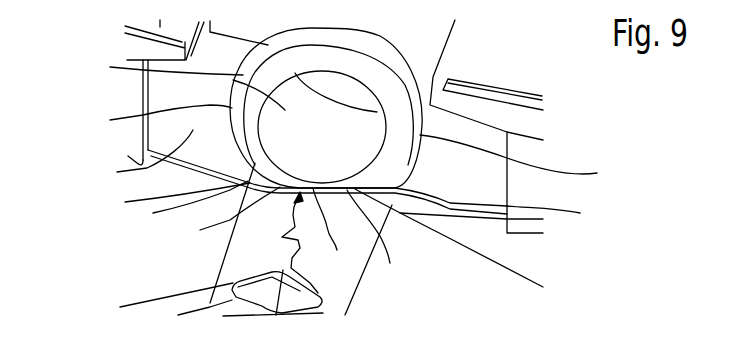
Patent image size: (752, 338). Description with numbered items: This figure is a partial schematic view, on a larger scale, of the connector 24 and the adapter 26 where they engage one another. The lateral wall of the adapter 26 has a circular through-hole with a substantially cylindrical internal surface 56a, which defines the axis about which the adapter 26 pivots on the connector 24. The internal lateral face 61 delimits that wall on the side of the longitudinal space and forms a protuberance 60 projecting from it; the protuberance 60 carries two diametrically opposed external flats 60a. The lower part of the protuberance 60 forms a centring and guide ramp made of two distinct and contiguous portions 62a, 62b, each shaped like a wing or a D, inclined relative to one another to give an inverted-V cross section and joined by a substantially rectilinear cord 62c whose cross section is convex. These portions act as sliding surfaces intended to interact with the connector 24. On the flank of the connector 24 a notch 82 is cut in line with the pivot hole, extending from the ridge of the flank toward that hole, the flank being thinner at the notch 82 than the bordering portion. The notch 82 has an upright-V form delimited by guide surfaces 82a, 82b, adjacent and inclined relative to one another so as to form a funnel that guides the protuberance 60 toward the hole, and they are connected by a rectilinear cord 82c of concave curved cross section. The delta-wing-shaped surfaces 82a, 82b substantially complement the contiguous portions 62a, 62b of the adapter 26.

The connector 24 is at (533, 277).
The adapter 26 is at (548, 110).
The cylindrical internal surface 56a is at (110, 67).
The protuberance 60 is at (400, 65).
The external flat 60a is at (110, 120).
The internal lateral face 61 is at (117, 172).
The contiguous portion 62a is at (153, 213).
The contiguous portion 62b is at (562, 213).
The rectilinear cord 62c is at (316, 185).
The notch 82 is at (277, 252).
The guide surface 82a is at (225, 222).
The contiguous portion 82b is at (379, 242).
The rectilinear cord 82c is at (333, 237).